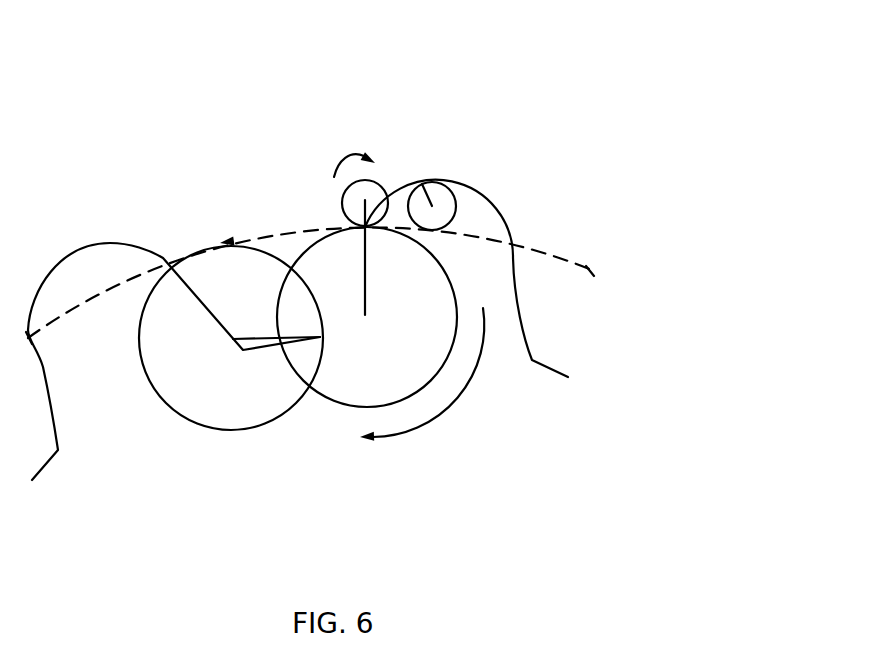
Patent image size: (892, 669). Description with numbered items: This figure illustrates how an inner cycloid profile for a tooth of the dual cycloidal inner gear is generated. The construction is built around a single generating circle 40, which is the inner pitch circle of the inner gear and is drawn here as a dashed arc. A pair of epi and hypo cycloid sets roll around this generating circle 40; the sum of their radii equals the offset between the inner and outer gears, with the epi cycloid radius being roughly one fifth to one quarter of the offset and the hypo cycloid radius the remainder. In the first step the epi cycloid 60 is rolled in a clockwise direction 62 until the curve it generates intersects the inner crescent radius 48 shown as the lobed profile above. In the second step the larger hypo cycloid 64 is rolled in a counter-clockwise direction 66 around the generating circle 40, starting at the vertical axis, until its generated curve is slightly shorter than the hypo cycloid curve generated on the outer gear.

The first generating circle 40 is at (590, 270).
The inner crescent radius with clearance 48 is at (457, 182).
The epi cycloid 60 is at (382, 180).
The clockwise direction 62 is at (333, 172).
The hypo cycloid 64 is at (238, 430).
The counter-clockwise direction 66 is at (437, 417).